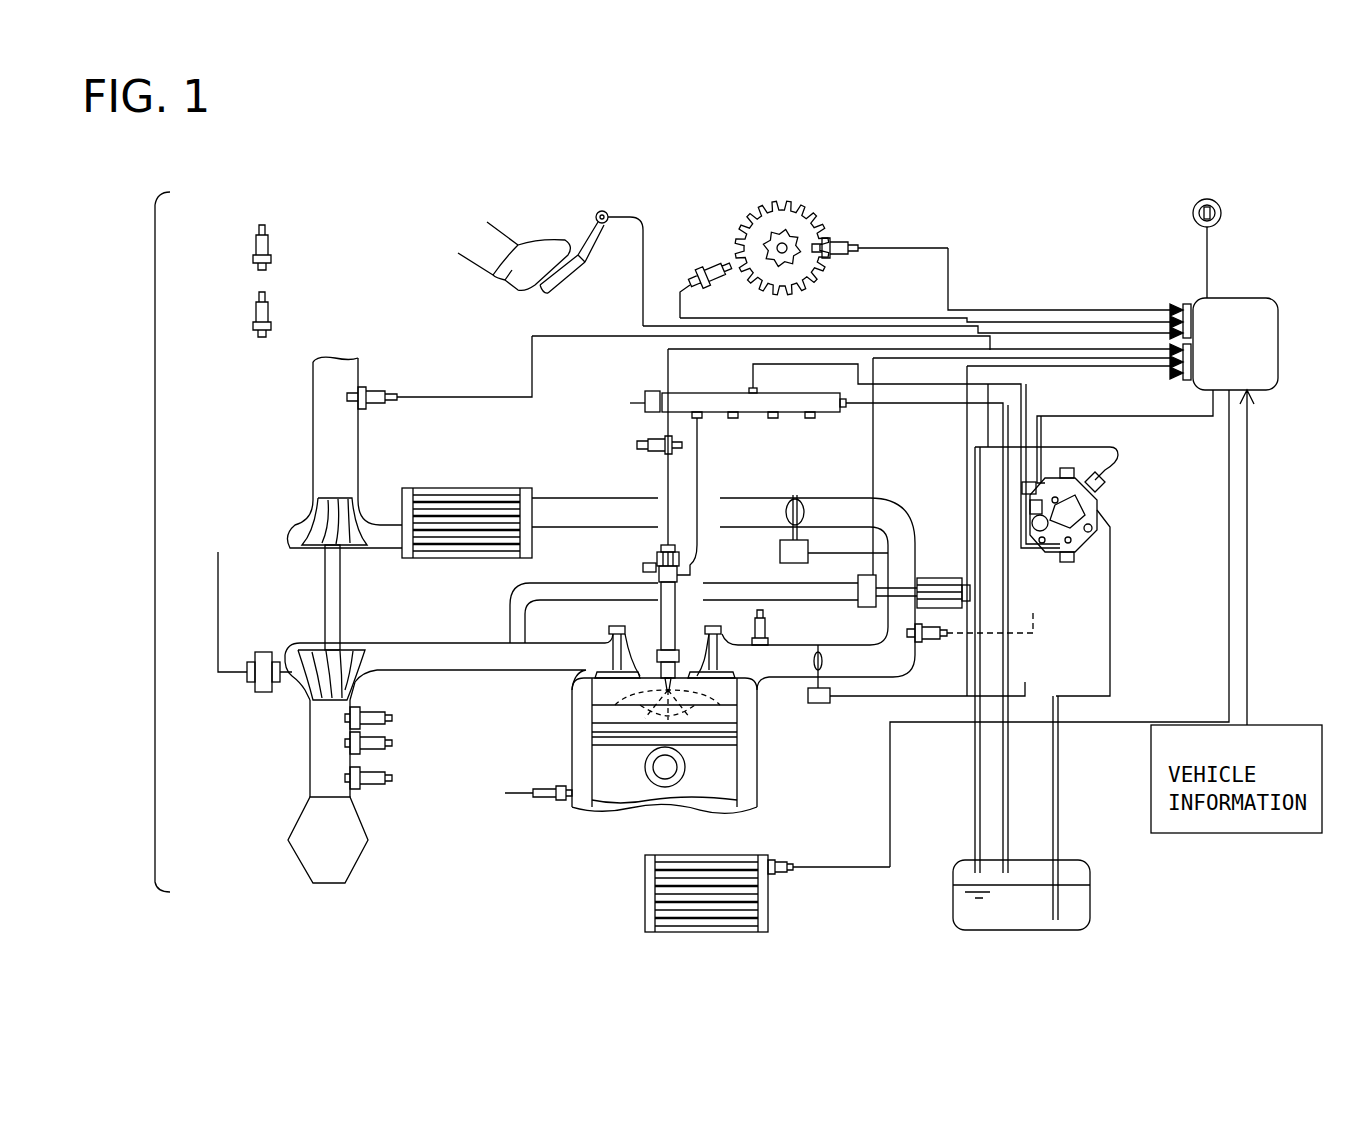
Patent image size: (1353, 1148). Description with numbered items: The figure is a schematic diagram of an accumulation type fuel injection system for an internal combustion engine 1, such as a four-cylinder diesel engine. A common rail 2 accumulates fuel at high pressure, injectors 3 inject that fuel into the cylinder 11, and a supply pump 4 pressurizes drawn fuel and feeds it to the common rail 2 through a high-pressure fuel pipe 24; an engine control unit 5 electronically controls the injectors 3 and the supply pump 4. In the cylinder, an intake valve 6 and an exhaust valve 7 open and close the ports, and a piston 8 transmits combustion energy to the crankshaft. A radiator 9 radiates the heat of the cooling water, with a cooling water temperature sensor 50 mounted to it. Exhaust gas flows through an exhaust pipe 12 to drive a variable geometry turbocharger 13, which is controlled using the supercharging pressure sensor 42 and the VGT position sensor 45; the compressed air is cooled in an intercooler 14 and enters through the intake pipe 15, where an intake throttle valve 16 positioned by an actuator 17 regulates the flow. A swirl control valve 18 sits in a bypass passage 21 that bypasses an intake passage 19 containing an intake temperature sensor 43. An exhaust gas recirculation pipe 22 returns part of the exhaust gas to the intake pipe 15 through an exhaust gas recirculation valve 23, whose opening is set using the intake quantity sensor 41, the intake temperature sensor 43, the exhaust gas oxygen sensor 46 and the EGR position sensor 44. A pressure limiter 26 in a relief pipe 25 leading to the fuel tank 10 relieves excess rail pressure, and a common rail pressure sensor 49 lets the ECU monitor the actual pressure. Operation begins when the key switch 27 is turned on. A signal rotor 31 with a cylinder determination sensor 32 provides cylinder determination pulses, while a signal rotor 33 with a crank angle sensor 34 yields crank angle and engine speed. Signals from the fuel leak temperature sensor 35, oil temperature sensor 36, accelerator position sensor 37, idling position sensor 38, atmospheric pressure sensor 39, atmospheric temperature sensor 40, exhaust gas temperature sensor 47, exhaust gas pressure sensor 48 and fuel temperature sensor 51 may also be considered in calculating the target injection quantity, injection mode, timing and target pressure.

The internal combustion engine 1 is at (577, 830).
The common rail 2 is at (723, 393).
The injectors 3 is at (660, 598).
The supply pump 4 is at (1080, 555).
The engine control unit 5 is at (1279, 343).
The intake valve 6 is at (737, 690).
The exhaust valve 7 is at (585, 680).
The piston 8 is at (727, 778).
The radiator 9 is at (720, 855).
The fuel tank 10 is at (955, 862).
The cylinder 11 is at (592, 715).
The exhaust pipe 12 is at (425, 640).
The variable geometry turbocharger 13 is at (318, 648).
The intercooler 14 is at (438, 486).
The intake pipe 15 is at (552, 496).
The intake throttle valve 16 is at (790, 505).
The actuator 17 is at (780, 553).
The swirl control valve 18 is at (820, 655).
The intake passage 19 is at (783, 650).
The bypass passage 21 is at (822, 705).
The exhaust gas recirculation pipe 22 is at (510, 600).
The exhaust gas recirculation valve 23 is at (880, 585).
The high-pressure fuel pipe 24 is at (1026, 395).
The relief pipe 25 is at (920, 418).
The pressure limiter 26 is at (845, 412).
The key switch 27 is at (1222, 212).
The signal rotor 31 is at (797, 238).
The cylinder determination sensor 32 is at (840, 240).
The signal rotor 33 is at (745, 225).
The crank angle sensor 34 is at (700, 276).
The fuel leak temperature sensor 35 is at (640, 447).
The oil temperature sensor 36 is at (533, 790).
The accelerator position sensor 37 is at (606, 212).
The idling position sensor 38 is at (596, 214).
The atmospheric pressure sensor 39 is at (268, 242).
The atmospheric temperature sensor 40 is at (268, 310).
The intake quantity sensor 41 is at (378, 386).
The supercharging pressure sensor 42 is at (925, 645).
The intake temperature sensor 43 is at (756, 628).
The EGR position sensor 44 is at (970, 593).
The VGT position sensor 45 is at (258, 694).
The exhaust gas oxygen sensor 46 is at (392, 718).
The exhaust gas temperature sensor 47 is at (392, 744).
The exhaust gas pressure sensor 48 is at (392, 778).
The common rail pressure sensor 49 is at (645, 396).
The cooling water temperature sensor 50 is at (805, 832).
The fuel temperature sensor 51 is at (1030, 510).